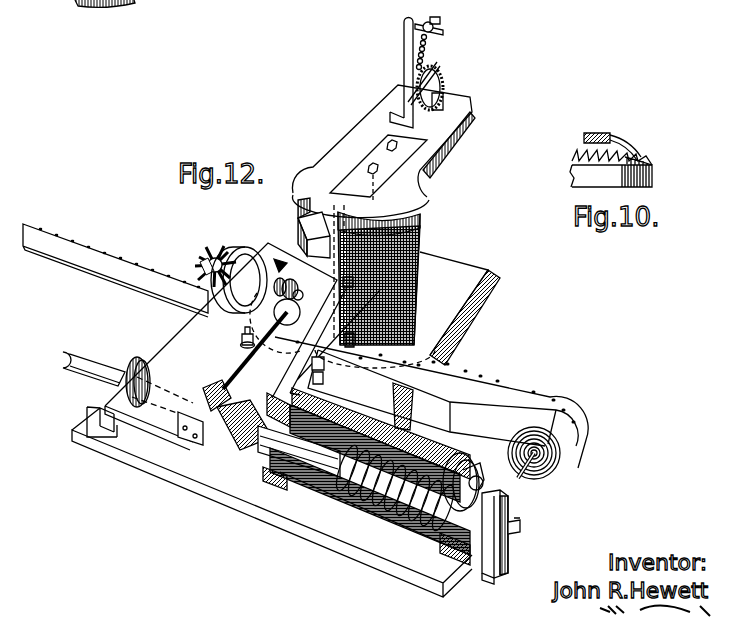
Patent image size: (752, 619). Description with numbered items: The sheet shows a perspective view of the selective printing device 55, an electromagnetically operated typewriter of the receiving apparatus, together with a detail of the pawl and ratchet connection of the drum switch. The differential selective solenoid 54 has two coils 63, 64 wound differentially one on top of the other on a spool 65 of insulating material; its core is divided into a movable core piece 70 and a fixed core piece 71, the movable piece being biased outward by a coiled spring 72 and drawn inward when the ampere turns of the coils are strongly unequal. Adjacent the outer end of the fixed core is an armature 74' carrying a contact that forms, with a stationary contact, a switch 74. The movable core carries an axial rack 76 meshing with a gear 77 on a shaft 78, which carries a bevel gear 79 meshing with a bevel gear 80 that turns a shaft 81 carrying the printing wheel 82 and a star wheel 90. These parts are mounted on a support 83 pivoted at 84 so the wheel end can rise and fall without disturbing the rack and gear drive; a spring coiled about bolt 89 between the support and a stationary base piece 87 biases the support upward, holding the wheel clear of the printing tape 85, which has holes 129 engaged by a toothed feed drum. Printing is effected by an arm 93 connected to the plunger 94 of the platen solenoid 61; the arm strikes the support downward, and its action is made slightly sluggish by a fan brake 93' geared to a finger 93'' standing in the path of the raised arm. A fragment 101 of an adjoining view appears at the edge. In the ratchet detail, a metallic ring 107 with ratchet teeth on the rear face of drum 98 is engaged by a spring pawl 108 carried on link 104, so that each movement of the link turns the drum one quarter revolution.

In FIG. 12, the differential selective solenoid 54 is at (291, 486).
In FIG. 12, the printing device 55 is at (242, 346).
In FIG. 12, the printing platen solenoid 61 is at (460, 299).
In FIG. 12, the coil 63 is at (307, 497).
In FIG. 12, the coil 64 is at (327, 502).
In FIG. 12, the spool 65 is at (480, 468).
In FIG. 12, the movable core piece 70 is at (261, 458).
In FIG. 12, the fixed core piece 71 is at (428, 539).
In FIG. 12, the coiled spring 72 is at (357, 514).
In FIG. 12, the switch 74 is at (508, 534).
In FIG. 12, the armature 74' is at (510, 567).
In FIG. 12, the axial rack 76 is at (228, 433).
In FIG. 12, the gear 77 is at (204, 393).
In FIG. 12, the shaft 78 is at (241, 365).
In FIG. 12, the bevel gear 79 is at (286, 330).
In FIG. 12, the bevel gear 80 is at (288, 285).
In FIG. 12, the shaft 81 is at (280, 266).
In FIG. 12, the printing wheel 82 is at (220, 303).
In FIG. 12, the support 83 is at (173, 347).
In FIG. 12, the pivot 84 is at (130, 360).
In FIG. 12, the printing tape 85 is at (38, 252).
In FIG. 12, the stationary base piece 87 is at (431, 408).
In FIG. 12, the bolt 89 is at (241, 339).
In FIG. 12, the star wheel 90 is at (212, 261).
In FIG. 12, the arm 93 is at (298, 228).
In FIG. 12, the fan brake 93' is at (387, 108).
In FIG. 12, the finger 93'' is at (450, 84).
In FIG. 12, the plunger 94 is at (417, 280).
In FIG. 12, the fragment 101 is at (89, 5).
In FIG. 12, the holes 129 is at (95, 245).
In FIG. 10, the drum 98 is at (653, 181).
In FIG. 10, the link 104 is at (602, 133).
In FIG. 10, the metallic ring 107 is at (650, 158).
In FIG. 10, the spring pawl 108 is at (630, 143).